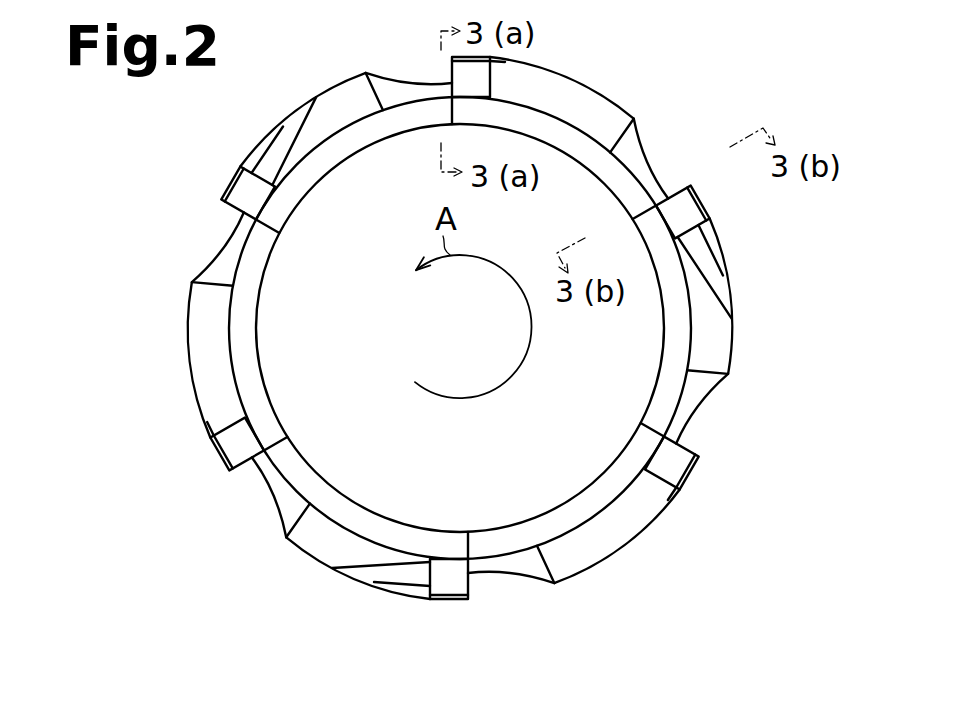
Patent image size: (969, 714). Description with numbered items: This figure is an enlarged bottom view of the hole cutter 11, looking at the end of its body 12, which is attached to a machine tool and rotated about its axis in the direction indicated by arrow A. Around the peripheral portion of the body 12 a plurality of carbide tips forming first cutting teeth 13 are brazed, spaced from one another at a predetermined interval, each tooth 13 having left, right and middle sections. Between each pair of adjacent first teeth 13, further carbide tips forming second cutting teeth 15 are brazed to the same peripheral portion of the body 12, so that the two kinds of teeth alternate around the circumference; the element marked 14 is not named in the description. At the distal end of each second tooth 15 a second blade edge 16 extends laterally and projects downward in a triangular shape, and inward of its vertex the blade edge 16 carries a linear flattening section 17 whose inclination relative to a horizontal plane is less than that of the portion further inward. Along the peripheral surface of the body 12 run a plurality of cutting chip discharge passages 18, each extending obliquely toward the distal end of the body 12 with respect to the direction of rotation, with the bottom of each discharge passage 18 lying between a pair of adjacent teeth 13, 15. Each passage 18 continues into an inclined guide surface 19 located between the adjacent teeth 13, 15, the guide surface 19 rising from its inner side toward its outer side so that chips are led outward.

The hole cutter 11 is at (805, 90).
The body 12 is at (734, 344).
The first cutting teeth 13 is at (482, 57).
The cutting edge corner of first insert 14 is at (450, 64).
The second cutting teeth 15 is at (234, 178).
The second blade edge 16 is at (221, 200).
The flattening section 17 is at (256, 228).
The cutting chip discharge passages 18 is at (362, 82).
The inclined guide surface 19 is at (396, 102).